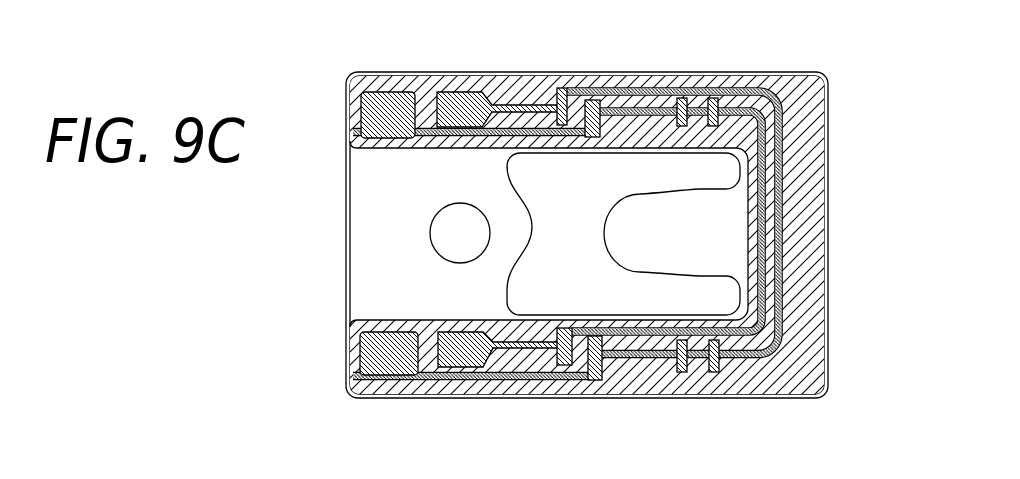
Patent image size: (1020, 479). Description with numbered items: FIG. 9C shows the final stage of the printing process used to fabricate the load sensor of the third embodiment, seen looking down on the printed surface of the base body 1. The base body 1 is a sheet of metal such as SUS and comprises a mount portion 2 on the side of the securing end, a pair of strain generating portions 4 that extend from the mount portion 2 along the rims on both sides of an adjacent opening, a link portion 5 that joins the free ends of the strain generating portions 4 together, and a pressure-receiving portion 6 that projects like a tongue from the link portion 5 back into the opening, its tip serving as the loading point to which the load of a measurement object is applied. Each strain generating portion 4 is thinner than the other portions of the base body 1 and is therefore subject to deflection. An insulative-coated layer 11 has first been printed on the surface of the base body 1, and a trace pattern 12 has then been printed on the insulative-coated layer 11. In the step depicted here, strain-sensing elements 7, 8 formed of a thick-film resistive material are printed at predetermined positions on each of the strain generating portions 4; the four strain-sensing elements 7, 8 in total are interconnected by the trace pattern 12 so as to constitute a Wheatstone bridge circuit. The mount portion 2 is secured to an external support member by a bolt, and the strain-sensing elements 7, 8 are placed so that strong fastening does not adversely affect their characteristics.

The base body 1 is at (346, 216).
The mount portion 2 is at (372, 288).
The strain generating portions 4 is at (631, 72).
The link portion 5 is at (828, 204).
The pressure-receiving portion 6 is at (623, 247).
The strain-sensing element 7 is at (578, 372).
The strain-sensing element 8 is at (711, 372).
The insulative-coated layer 11 is at (803, 98).
The trace pattern 12 is at (522, 100).